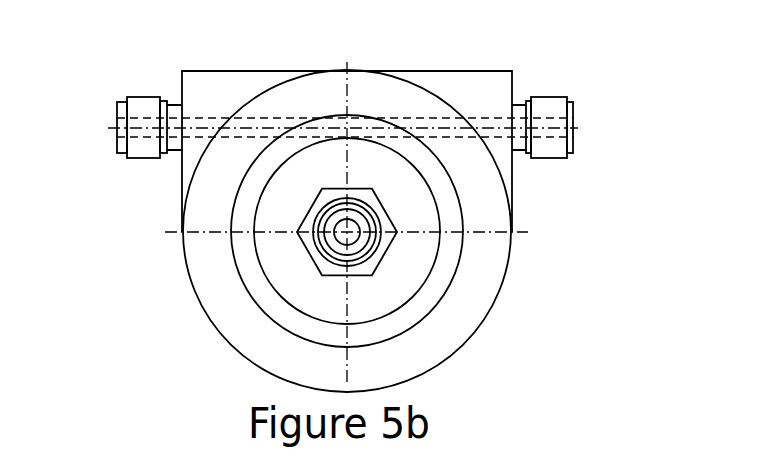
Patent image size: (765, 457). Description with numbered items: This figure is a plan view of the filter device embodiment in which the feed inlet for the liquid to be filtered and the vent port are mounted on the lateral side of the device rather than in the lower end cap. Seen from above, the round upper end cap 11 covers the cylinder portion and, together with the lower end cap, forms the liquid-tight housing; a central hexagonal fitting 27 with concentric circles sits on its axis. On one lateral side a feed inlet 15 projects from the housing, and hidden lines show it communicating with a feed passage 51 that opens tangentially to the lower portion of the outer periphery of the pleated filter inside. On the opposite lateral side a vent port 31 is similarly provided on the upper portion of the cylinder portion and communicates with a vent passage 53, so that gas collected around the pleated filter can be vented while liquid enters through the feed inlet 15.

The upper end cap 11 is at (443, 332).
The feed inlet 15 is at (573, 126).
The hex nut 27 is at (298, 232).
The vent port 31 is at (117, 127).
The feed passage 51 is at (442, 118).
The vent passage 53 is at (213, 118).